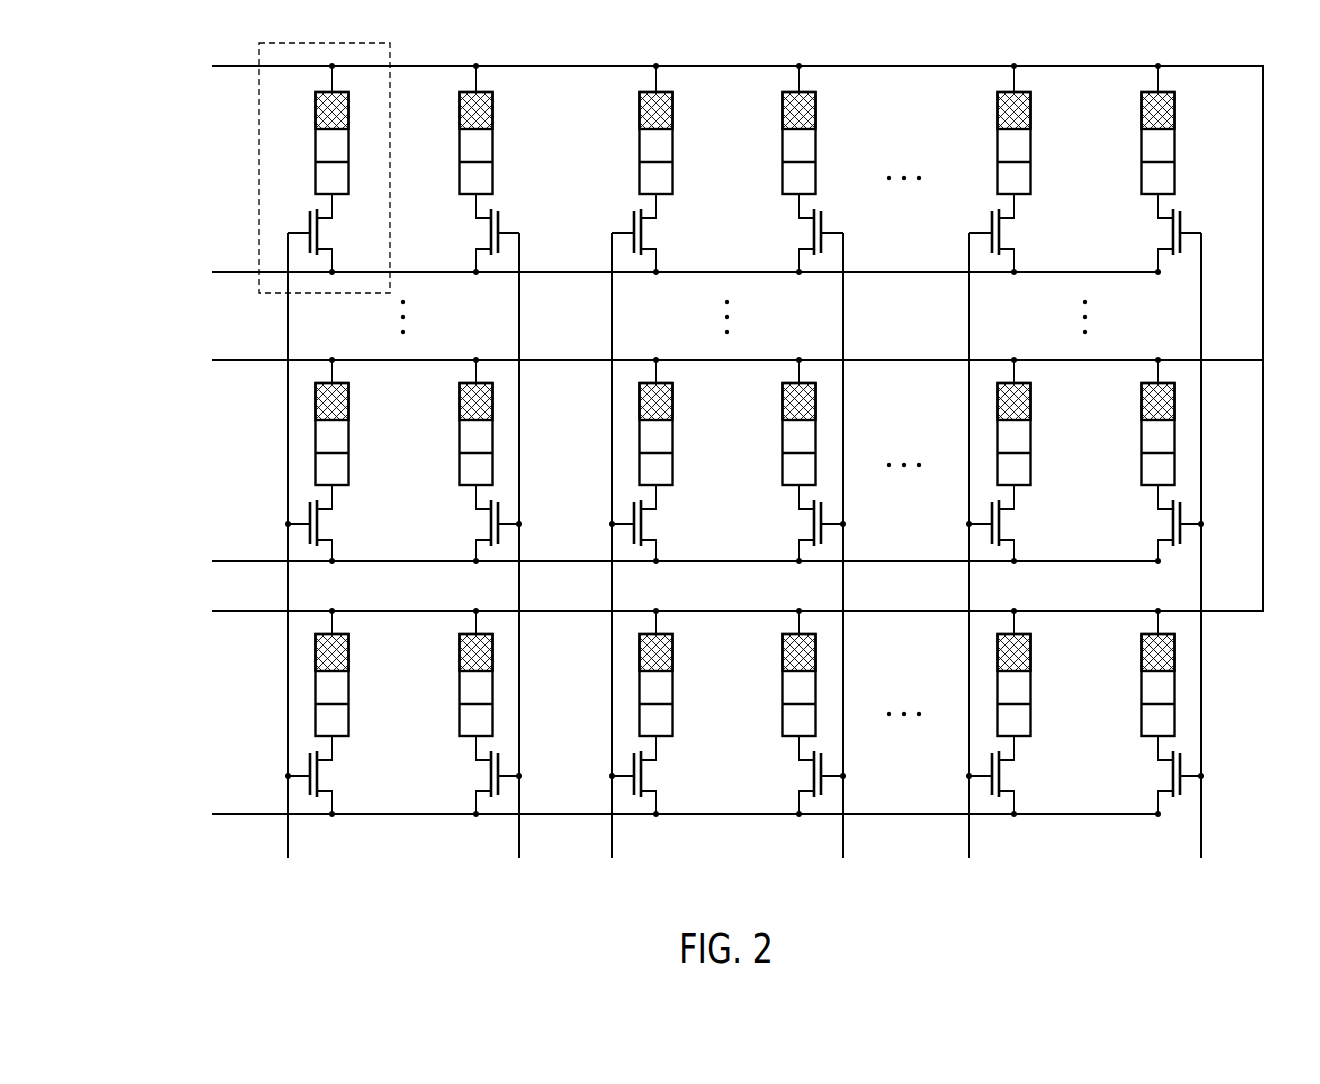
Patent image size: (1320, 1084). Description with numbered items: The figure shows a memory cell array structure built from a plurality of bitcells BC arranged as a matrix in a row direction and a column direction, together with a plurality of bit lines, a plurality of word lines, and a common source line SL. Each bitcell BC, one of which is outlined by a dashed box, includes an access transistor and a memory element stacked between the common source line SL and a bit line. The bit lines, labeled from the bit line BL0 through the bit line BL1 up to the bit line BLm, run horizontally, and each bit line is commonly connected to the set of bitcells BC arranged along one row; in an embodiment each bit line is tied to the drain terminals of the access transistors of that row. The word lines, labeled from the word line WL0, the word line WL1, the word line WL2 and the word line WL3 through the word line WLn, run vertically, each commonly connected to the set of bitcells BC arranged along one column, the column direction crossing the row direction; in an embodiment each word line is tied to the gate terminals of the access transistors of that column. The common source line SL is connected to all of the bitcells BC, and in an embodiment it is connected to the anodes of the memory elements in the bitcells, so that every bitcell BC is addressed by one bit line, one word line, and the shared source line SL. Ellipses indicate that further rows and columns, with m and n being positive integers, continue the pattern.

The bitcell BC is at (258, 106).
The common source line SL is at (710, 340).
The bit line BLm is at (649, 273).
The bit line BL1 is at (655, 562).
The bit line BL0 is at (655, 815).
The word line WL0 is at (286, 564).
The word line WL1 is at (521, 564).
The word line WL2 is at (620, 564).
The word line WL3 is at (852, 564).
The word line WLn is at (1215, 564).